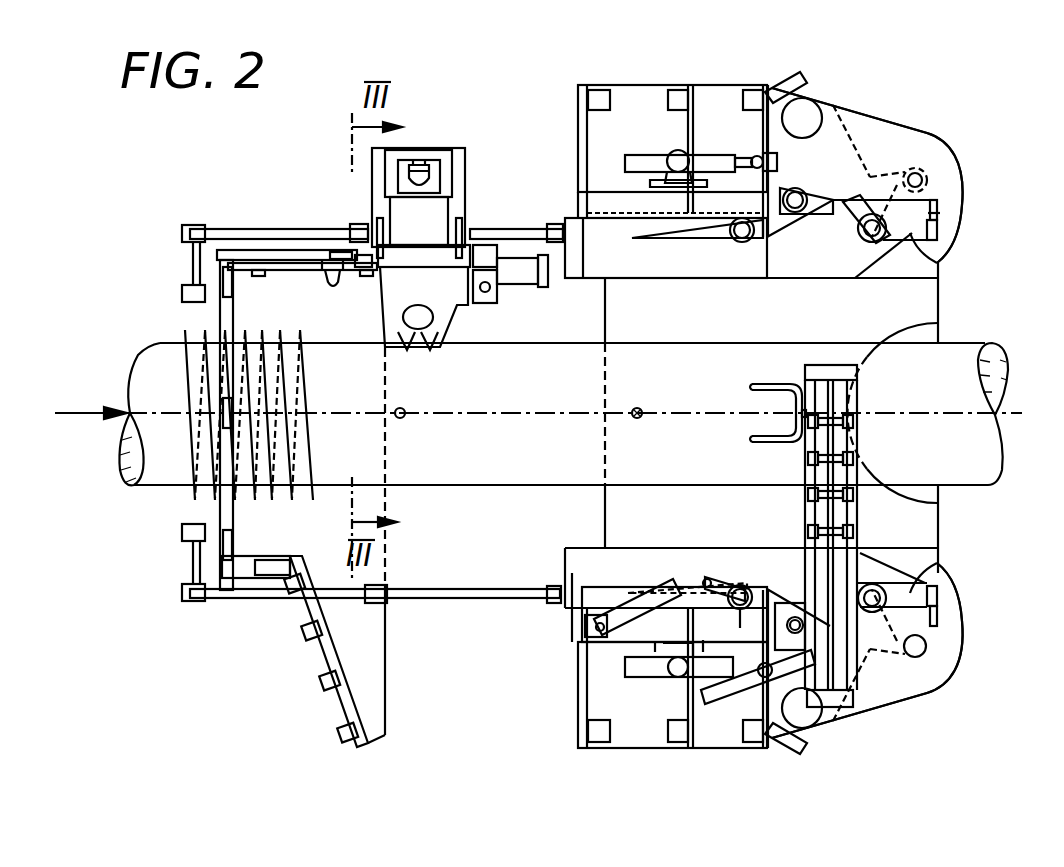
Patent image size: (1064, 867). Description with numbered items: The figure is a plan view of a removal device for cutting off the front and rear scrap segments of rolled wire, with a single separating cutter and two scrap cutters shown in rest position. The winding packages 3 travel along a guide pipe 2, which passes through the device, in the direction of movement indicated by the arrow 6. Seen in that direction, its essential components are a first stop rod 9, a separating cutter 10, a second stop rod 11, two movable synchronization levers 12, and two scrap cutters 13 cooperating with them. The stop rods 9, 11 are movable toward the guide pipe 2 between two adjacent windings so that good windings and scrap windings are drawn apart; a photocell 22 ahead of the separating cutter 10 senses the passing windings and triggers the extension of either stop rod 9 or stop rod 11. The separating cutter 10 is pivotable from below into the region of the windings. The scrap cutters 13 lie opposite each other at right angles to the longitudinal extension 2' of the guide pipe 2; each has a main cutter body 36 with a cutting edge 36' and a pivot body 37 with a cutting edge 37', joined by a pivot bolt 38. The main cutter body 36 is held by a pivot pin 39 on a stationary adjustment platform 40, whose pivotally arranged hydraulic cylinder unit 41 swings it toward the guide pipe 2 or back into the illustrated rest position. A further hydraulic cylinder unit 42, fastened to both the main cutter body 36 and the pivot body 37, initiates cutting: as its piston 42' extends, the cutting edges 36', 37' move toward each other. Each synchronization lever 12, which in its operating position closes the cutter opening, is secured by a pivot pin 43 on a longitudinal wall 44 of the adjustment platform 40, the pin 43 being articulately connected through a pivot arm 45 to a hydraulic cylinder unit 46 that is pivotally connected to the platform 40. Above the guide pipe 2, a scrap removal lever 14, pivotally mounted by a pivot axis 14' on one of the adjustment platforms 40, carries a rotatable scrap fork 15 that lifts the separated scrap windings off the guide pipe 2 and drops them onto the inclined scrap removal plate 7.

The guide pipe 2 is at (585, 414).
The longitudinal extension of the guide element 2' is at (549, 449).
The winding package 3 is at (185, 337).
The arrow 6 is at (66, 411).
The scrap removal plate 7 is at (925, 310).
The first stop rod 9 is at (405, 410).
The separating cutter 10 is at (448, 127).
The second stop rod 11 is at (642, 407).
The synchronization lever 12 is at (643, 240).
The scrap cutter 13 is at (890, 92).
The scrap removal lever 14 is at (831, 502).
The pivot axis 14' is at (788, 596).
The scrap fork 15 is at (767, 382).
The photocell 22 is at (331, 266).
The main cutter body 36 is at (900, 411).
The cutting edge of main cutter body 36' is at (982, 402).
The pivot body 37 is at (883, 413).
The cutting edge of pivot body 37' is at (982, 412).
The pivot bolt 38 is at (927, 179).
The pivot pin 39 is at (800, 191).
The adjustment platform 40 is at (723, 97).
The hydraulic cylinder unit 41 is at (638, 158).
The hydraulic cylinder unit 42 is at (814, 411).
The piston 42' is at (848, 403).
The pivot pin 43 is at (744, 240).
The longitudinal wall 44 is at (616, 219).
The pivot arm 45 is at (713, 577).
The hydraulic cylinder unit 46 is at (612, 617).